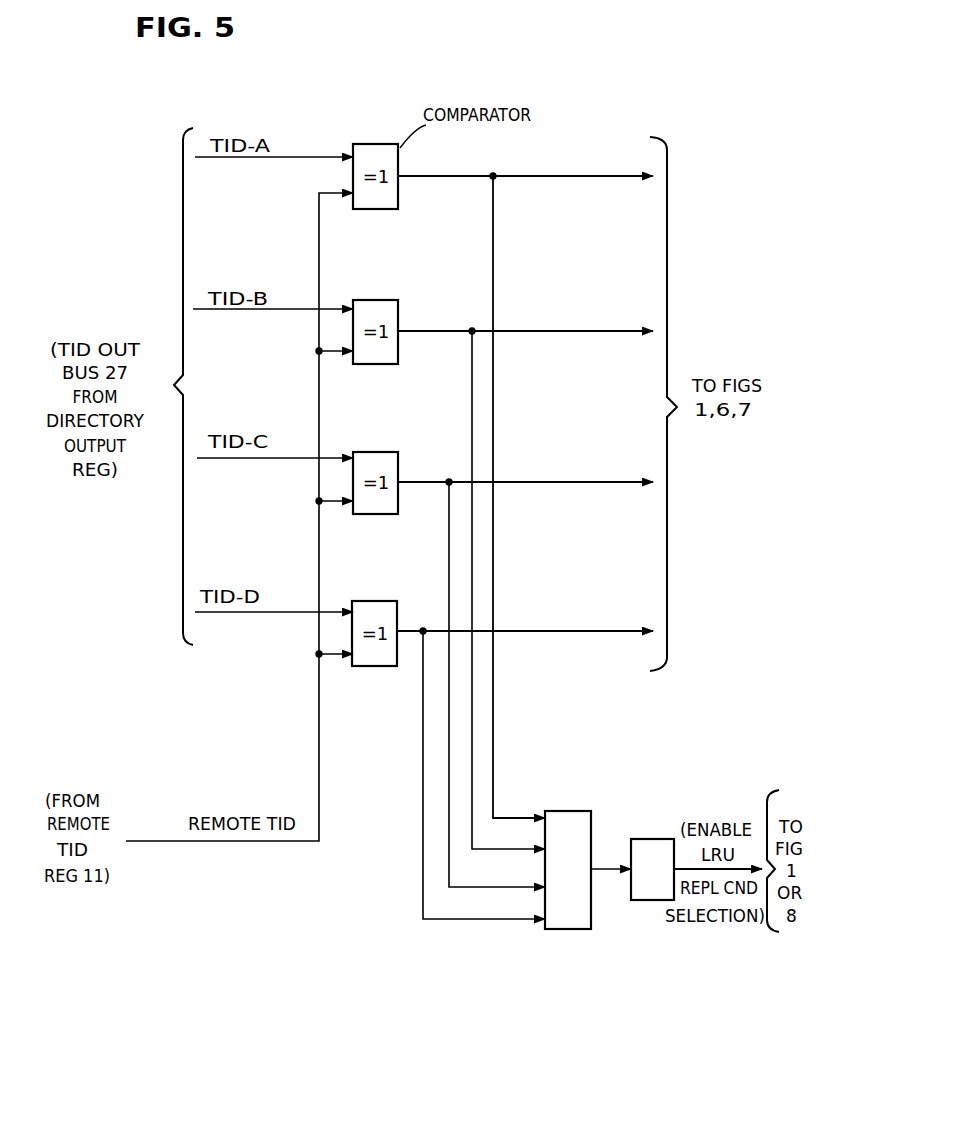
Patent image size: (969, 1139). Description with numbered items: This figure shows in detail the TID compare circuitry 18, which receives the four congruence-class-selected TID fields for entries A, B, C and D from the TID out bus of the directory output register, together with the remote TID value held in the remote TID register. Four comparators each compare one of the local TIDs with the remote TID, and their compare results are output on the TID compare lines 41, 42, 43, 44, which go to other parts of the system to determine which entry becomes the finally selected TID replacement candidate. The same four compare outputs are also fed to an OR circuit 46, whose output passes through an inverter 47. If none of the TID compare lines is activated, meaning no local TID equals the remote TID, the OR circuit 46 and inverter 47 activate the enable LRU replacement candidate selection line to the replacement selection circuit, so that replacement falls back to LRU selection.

The TID compare circuitry 18 is at (350, 948).
The TID compare line A 41 is at (600, 178).
The TID compare line B 42 is at (603, 334).
The TID compare line C 43 is at (605, 485).
The TID compare line D 44 is at (612, 635).
The OR circuit 46 is at (572, 810).
The inverter 47 is at (647, 839).